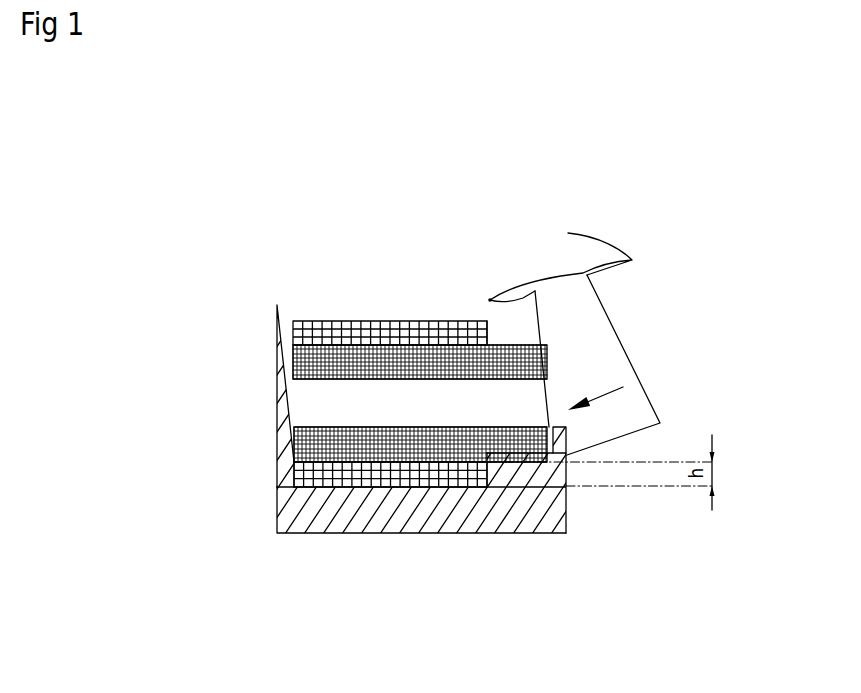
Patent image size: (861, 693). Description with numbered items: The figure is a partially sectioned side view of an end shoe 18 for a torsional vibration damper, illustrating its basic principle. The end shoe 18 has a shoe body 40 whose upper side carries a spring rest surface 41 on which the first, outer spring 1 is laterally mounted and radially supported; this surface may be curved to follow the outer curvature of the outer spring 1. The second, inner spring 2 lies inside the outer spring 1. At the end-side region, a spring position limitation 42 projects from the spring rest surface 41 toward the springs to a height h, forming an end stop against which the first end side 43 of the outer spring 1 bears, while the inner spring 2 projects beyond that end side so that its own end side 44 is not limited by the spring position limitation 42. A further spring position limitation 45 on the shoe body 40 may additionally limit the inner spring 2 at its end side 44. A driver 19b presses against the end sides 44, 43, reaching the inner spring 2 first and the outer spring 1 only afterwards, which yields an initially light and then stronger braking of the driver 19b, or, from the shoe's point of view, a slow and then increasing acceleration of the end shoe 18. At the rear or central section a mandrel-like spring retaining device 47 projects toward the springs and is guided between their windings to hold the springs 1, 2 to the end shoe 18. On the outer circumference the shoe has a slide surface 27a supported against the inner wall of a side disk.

The first, outer spring 1 is at (318, 322).
The second, inner spring 2 is at (522, 347).
The end shoe 18 is at (598, 536).
The driver 19b is at (607, 315).
The slide surface 27a is at (312, 533).
The shoe body 40 is at (566, 507).
The spring rest surface 41 is at (368, 485).
The spring position limitation 42 is at (485, 487).
The first end side of the first, outer spring 43 is at (488, 333).
The first end side of the second, inner spring 44 is at (545, 398).
The further spring position limitation 45 is at (562, 442).
The spring retaining device 47 is at (275, 305).